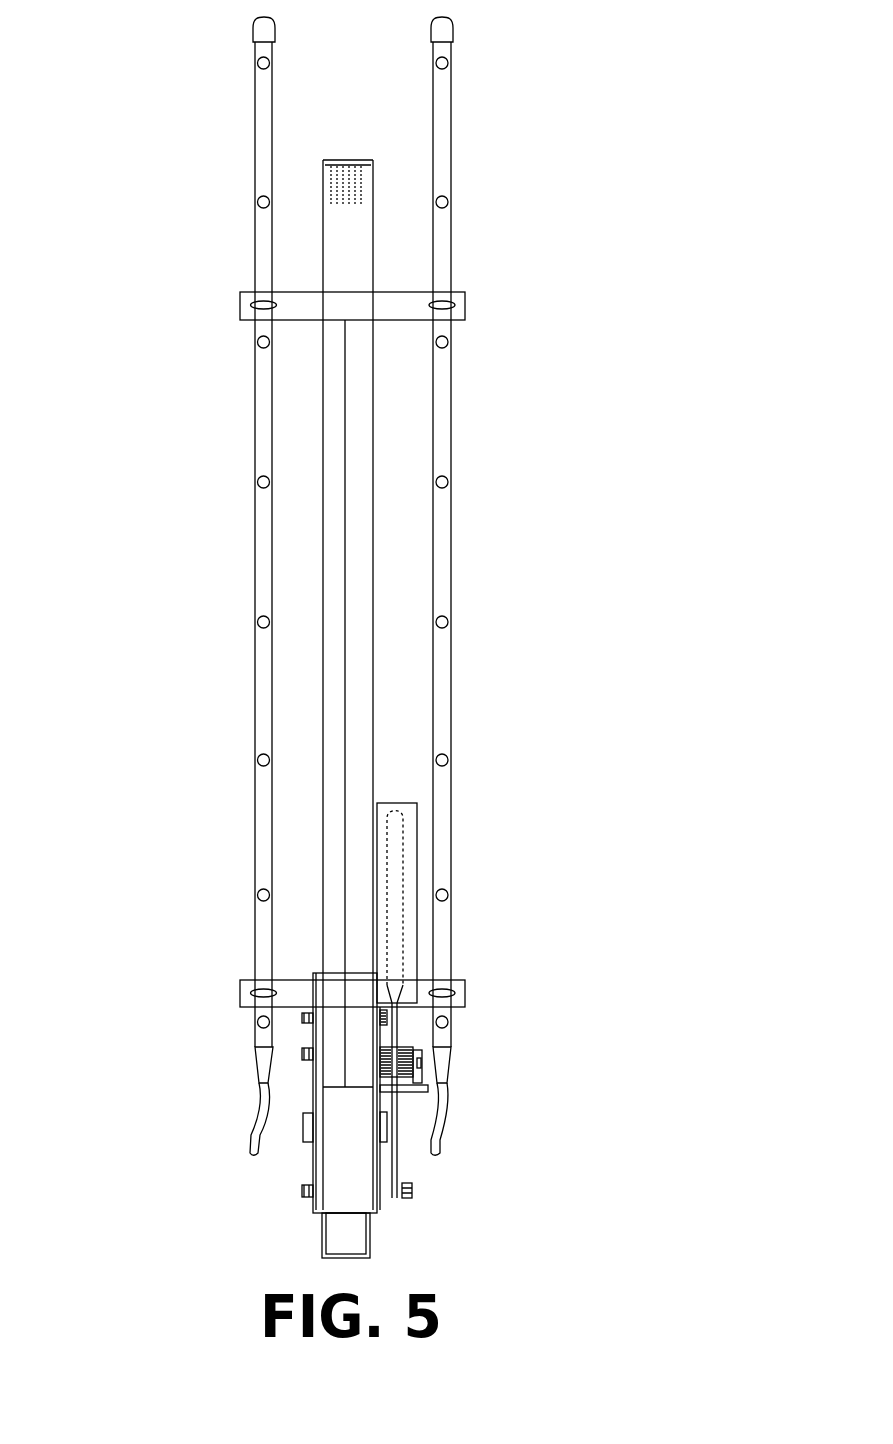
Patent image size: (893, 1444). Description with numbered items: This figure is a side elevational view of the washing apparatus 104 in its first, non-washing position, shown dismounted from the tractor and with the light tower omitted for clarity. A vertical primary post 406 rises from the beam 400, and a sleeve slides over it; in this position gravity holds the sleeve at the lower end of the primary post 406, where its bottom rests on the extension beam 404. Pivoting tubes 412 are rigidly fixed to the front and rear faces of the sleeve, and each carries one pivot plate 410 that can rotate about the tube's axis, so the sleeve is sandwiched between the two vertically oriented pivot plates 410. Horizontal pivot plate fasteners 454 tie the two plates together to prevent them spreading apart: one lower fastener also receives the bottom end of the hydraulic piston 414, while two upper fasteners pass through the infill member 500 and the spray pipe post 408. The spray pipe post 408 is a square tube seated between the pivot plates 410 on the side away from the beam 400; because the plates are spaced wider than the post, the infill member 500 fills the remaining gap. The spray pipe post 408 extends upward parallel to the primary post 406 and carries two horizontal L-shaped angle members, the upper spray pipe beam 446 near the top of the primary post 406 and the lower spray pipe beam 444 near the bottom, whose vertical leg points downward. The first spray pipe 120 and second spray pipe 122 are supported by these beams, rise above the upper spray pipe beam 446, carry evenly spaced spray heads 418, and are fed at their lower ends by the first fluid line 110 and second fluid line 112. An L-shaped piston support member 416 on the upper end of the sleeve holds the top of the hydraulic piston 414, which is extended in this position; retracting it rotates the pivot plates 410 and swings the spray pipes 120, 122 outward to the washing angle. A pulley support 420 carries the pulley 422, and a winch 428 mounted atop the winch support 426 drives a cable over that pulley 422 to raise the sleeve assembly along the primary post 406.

The washing apparatus 104 is at (127, 243).
The first fluid line 110 is at (438, 1133).
The second fluid line 112 is at (258, 1085).
The first spray pipe 120 is at (255, 385).
The second spray pipe 122 is at (448, 680).
The beam 400 is at (372, 1258).
The extension beam 404 is at (327, 1233).
The primary post 406 is at (373, 272).
The spray pipe post 408 is at (323, 830).
The pivot plate 410 is at (307, 1167).
The pivoting tubes 412 is at (303, 1125).
The hydraulic piston 414 is at (402, 868).
The piston support member 416 is at (405, 803).
The spray heads 418 is at (258, 487).
The pulley support 420 is at (352, 160).
The pulley 422 is at (350, 205).
The winch support 426 is at (405, 1097).
The winch 428 is at (408, 1043).
The lower spray pipe beam 444 is at (465, 980).
The upper spray pipe beam 446 is at (465, 292).
The pivot plate fasteners 454 is at (410, 1198).
The infill member 500 is at (353, 1037).